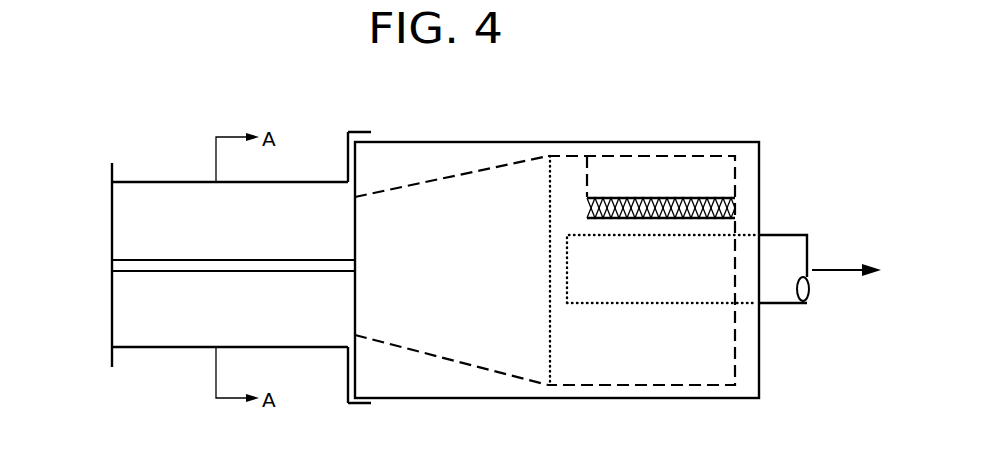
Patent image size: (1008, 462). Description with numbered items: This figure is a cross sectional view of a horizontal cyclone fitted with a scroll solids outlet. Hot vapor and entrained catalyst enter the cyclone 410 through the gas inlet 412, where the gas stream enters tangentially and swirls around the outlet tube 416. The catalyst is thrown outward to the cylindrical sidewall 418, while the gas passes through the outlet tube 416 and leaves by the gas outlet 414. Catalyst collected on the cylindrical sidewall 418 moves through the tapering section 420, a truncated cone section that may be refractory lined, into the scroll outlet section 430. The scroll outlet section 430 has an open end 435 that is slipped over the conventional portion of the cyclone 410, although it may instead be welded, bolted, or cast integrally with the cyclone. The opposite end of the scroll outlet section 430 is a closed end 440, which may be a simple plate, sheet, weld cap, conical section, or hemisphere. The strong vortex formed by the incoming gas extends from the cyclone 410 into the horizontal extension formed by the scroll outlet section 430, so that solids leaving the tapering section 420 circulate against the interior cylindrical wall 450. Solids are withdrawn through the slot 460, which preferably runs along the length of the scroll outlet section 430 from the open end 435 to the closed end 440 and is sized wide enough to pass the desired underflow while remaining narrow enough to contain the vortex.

The cyclone 410 is at (460, 142).
The gas inlet 412 is at (735, 218).
The gas outlet 414 is at (810, 256).
The outlet tube 416 is at (650, 306).
The cylindrical sidewall 418 is at (572, 385).
The tapering section 420 is at (491, 371).
The scroll outlet section 430 is at (326, 181).
The open end 435 is at (372, 131).
The closed end 440 is at (111, 242).
The interior cylindrical wall 450 is at (170, 347).
The slot 460 is at (142, 271).